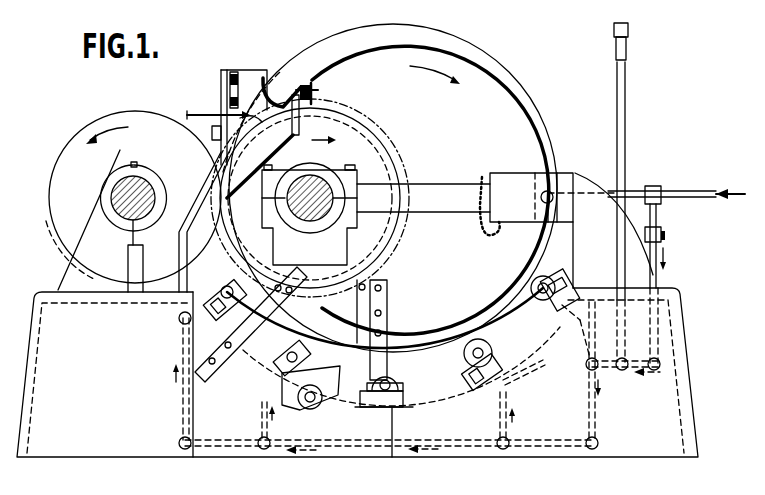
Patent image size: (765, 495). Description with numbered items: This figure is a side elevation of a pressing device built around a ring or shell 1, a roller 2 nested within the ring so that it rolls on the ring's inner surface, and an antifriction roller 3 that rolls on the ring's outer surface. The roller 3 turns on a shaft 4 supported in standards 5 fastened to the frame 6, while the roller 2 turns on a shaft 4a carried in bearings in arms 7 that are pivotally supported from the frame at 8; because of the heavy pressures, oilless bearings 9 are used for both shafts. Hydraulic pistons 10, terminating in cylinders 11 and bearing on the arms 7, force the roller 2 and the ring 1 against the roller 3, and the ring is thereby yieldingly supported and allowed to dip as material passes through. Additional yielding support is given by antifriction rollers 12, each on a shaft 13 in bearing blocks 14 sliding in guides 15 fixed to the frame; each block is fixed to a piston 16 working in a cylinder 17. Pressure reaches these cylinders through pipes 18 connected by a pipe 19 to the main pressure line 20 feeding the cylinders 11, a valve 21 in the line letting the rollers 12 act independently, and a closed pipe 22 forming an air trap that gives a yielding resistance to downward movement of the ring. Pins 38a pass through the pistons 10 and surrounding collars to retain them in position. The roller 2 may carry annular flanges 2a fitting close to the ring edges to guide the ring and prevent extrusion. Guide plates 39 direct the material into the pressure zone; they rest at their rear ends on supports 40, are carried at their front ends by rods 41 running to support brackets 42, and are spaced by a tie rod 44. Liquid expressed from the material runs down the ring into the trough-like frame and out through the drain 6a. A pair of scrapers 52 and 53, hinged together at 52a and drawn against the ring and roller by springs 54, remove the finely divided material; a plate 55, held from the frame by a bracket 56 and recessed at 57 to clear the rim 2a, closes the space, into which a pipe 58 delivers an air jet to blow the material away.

The ring 1 is at (507, 91).
The roller 2 is at (352, 141).
The annular flanges 2a is at (393, 169).
The antifriction roller 3 is at (109, 120).
The shaft 4 is at (118, 199).
The shaft 4a is at (336, 169).
The standards 5 is at (70, 269).
The frame 6 is at (34, 363).
The drain 6a is at (397, 442).
The arms 7 is at (362, 246).
The pivot 8 is at (314, 403).
The oilless bearings 9 is at (133, 212).
The pistons 10 is at (442, 184).
The cylinders 11 is at (549, 181).
The antifriction rollers 12 is at (228, 287).
The shaft 13 is at (540, 289).
The bearing blocks 14 is at (233, 291).
The guides 15 is at (546, 307).
The piston 16 is at (466, 373).
The cylinder 17 is at (528, 369).
The pipes 18 is at (183, 403).
The pipe 19 is at (666, 251).
The main pressure line 20 is at (679, 193).
The valve 21 is at (661, 233).
The closed pipe 22 is at (626, 149).
The pins 38a is at (482, 176).
The guide plates 39 is at (393, 347).
The supports 40 is at (388, 319).
The rods 41 is at (279, 285).
The support brackets 42 is at (251, 347).
The tie rod 44 is at (373, 281).
The scraper 52 is at (280, 90).
The hinge 52a is at (306, 89).
The scraper 53 is at (289, 123).
The springs 54 is at (284, 88).
The plate 55 is at (247, 73).
The bracket 56 is at (204, 174).
The recess 57 is at (212, 131).
The pipe 58 is at (215, 115).